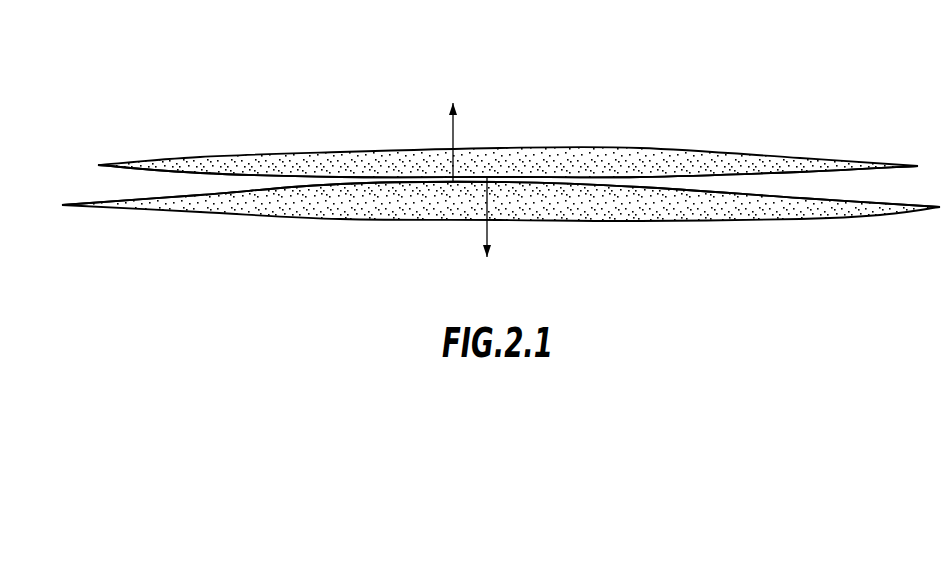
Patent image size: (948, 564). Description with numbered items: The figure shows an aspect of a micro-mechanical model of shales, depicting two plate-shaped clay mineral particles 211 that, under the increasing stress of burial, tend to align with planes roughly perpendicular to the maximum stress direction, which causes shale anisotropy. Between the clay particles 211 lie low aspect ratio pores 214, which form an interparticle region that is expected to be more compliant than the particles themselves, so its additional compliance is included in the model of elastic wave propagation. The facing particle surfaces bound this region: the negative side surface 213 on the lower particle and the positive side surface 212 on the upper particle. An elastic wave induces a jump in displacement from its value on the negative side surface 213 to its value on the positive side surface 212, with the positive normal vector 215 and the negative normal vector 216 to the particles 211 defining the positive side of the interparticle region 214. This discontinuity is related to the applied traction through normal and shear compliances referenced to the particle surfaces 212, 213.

The plate-shaped clay mineral particles 211 is at (267, 188).
The positive side S+ 212 is at (570, 171).
The negative side S- 213 is at (570, 190).
The low aspect ratio pores 214 is at (508, 177).
The normal n+ 215 is at (448, 125).
The normal n- 216 is at (483, 233).